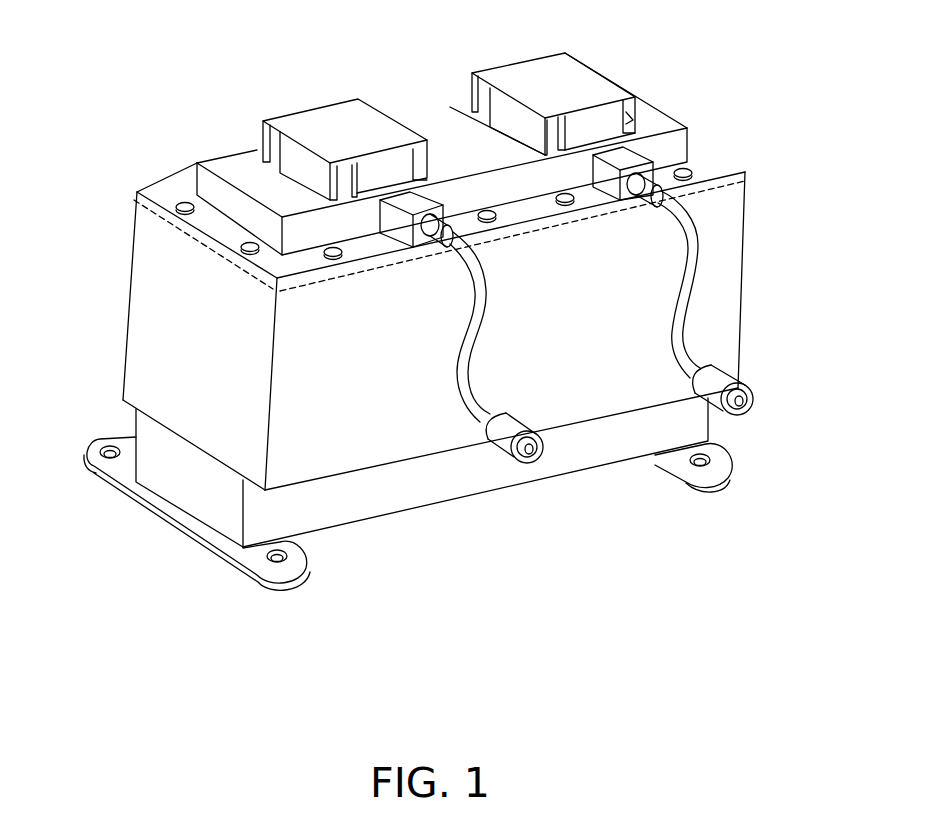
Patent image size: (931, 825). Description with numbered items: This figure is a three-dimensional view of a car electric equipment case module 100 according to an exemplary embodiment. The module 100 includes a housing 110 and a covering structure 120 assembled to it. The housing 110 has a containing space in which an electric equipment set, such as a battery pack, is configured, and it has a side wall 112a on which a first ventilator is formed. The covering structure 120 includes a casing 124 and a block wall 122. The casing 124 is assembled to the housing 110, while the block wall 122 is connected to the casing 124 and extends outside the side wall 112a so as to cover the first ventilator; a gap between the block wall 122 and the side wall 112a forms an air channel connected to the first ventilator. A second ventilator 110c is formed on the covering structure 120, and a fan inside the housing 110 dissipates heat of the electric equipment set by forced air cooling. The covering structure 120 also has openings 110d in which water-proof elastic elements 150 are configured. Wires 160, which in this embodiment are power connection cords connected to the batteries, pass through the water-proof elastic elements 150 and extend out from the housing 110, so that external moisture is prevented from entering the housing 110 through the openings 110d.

The car electric equipment case module 100 is at (786, 660).
The housing 110 is at (120, 425).
The second ventilator 110c is at (628, 118).
The openings 110d is at (398, 265).
The side wall 112a is at (568, 448).
The covering structure 120 is at (113, 285).
The block wall 122 is at (198, 412).
The casing 124 is at (170, 194).
The water-proof elastic elements 150 is at (434, 222).
The wires 160 is at (463, 358).